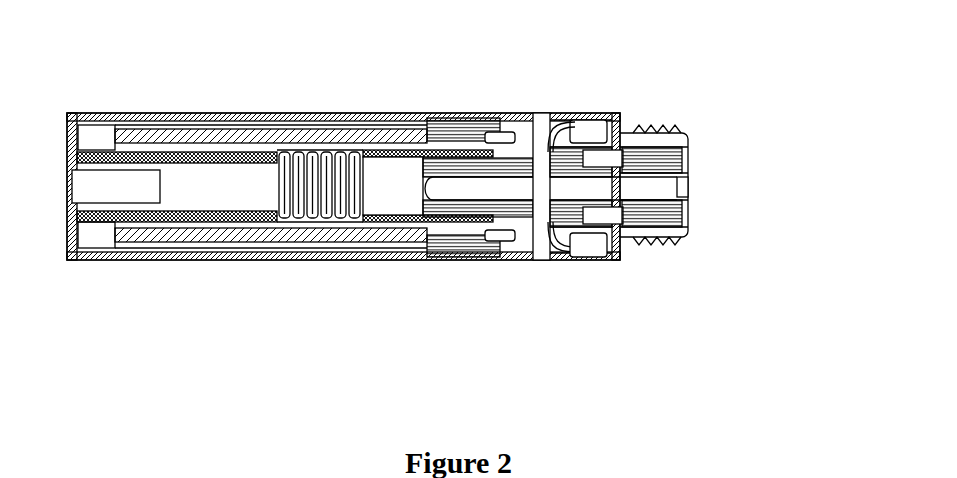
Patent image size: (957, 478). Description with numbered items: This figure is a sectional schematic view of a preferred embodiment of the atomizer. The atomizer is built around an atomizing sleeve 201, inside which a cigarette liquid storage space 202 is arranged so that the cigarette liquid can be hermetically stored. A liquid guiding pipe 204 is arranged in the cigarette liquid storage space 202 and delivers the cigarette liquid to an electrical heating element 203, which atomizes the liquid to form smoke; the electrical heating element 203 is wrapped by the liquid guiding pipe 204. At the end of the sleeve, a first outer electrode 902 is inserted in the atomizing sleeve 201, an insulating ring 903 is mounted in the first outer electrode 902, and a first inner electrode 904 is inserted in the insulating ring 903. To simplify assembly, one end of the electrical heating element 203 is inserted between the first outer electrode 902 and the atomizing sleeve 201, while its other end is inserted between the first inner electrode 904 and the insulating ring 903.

The atomizing sleeve 201 is at (373, 117).
The cigarette liquid storage space 202 is at (287, 240).
The electrical heating element 203 is at (330, 215).
The liquid guiding pipe 204 is at (217, 160).
The first outer electrode 902 is at (692, 127).
The insulating ring 903 is at (645, 160).
The first inner electrode 904 is at (608, 217).